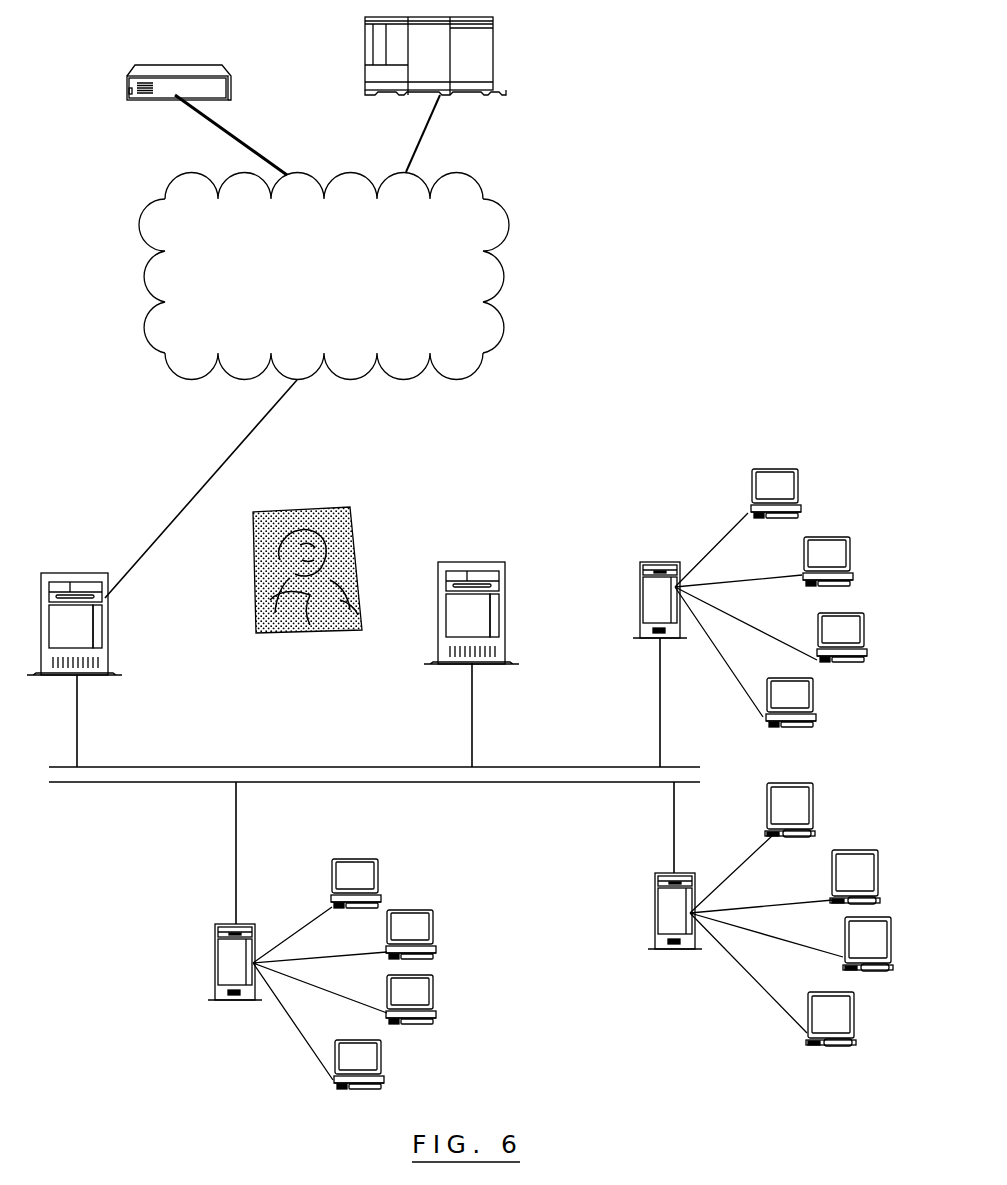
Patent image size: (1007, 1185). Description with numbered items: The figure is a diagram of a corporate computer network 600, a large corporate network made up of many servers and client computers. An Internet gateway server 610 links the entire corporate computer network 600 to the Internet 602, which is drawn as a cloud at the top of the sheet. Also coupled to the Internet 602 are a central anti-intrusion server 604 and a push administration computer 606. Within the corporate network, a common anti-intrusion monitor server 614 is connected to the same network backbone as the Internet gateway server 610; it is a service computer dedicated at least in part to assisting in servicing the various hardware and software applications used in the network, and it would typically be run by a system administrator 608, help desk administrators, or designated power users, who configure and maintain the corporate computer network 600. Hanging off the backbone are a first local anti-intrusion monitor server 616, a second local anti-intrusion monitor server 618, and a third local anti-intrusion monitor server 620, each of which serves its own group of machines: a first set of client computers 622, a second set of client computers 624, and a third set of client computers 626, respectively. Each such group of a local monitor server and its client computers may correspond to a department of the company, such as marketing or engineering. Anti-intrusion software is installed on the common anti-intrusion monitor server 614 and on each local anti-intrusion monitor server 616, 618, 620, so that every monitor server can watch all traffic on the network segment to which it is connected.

The corporate computer network 600 is at (395, 476).
The Internet 602 is at (351, 276).
The central anti-intrusion server 604 is at (459, 92).
The push administration computer 606 is at (207, 100).
The system administrator 608 is at (307, 555).
The Internet gateway server 610 is at (162, 573).
The common anti-intrusion monitor server 614 is at (489, 664).
The first local anti-intrusion monitor server 616 is at (205, 891).
The second local anti-intrusion monitor server 618 is at (647, 641).
The third local anti-intrusion monitor server 620 is at (644, 865).
The first set of client computers 622 is at (349, 974).
The second set of client computers 624 is at (771, 598).
The third set of client computers 626 is at (791, 914).